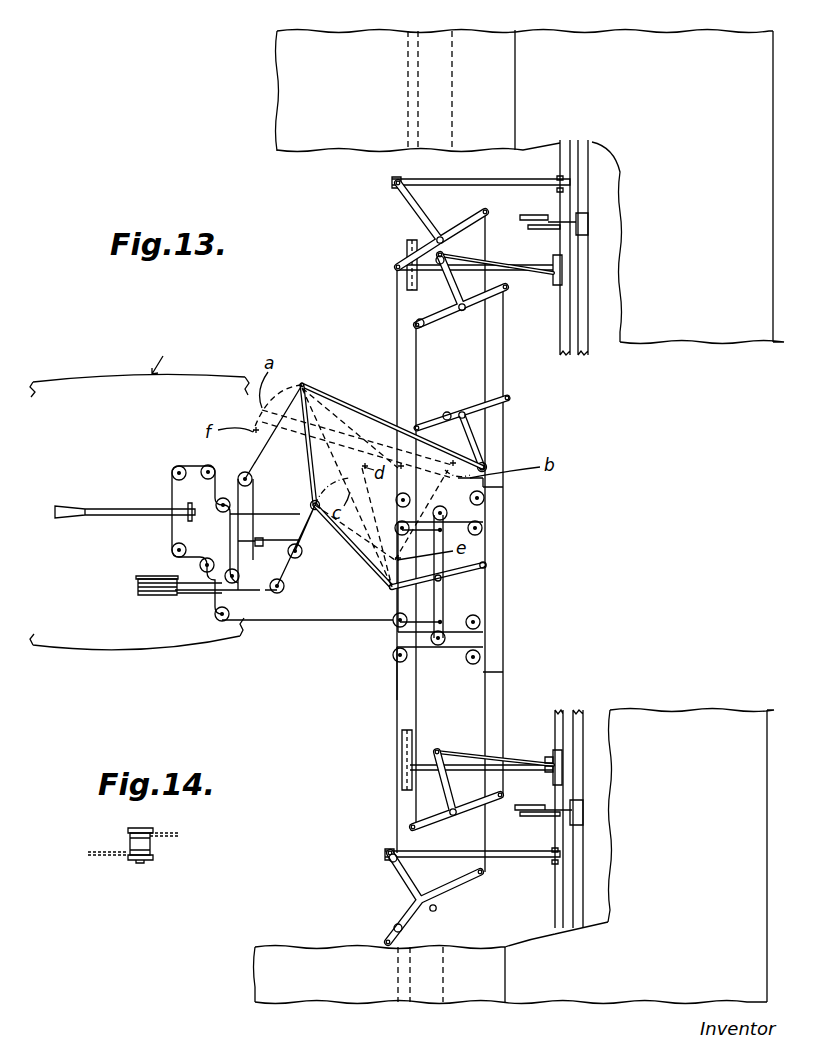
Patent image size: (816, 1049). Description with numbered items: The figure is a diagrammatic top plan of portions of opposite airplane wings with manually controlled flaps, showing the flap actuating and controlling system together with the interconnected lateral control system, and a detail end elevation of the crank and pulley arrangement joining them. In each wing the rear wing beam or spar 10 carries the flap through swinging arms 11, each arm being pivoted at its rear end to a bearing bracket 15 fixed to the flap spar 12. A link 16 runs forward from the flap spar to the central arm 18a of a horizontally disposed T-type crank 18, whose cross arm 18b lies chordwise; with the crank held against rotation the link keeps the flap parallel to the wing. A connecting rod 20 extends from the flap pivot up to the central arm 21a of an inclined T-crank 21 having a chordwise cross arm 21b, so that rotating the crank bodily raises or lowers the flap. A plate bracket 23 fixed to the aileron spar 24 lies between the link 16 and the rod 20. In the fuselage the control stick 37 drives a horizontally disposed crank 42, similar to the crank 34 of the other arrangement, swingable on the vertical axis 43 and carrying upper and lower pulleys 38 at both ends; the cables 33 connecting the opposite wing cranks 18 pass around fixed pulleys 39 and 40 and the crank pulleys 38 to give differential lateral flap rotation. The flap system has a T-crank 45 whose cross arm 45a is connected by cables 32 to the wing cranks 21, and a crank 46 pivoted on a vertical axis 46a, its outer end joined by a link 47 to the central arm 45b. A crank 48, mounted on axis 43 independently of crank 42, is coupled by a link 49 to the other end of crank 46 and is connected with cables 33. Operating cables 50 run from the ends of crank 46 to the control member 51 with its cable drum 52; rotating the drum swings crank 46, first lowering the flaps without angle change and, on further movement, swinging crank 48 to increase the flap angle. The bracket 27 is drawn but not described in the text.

In FIG. 13, the rear wing beam or spar 10 is at (418, 42).
In FIG. 13, the arm 11 is at (522, 277).
In FIG. 13, the flap spar 12 is at (560, 336).
In FIG. 13, the bearing bracket 15 is at (555, 760).
In FIG. 13, the link 16 is at (481, 184).
In FIG. 13, the crank 18 is at (422, 228).
In FIG. 13, the central arm 18a is at (399, 868).
In FIG. 13, the cross arm 18b is at (420, 922).
In FIG. 13, the connecting rod 20 is at (507, 268).
In FIG. 13, the T-crank 21 is at (460, 315).
In FIG. 13, the central arm 21a is at (432, 272).
In FIG. 13, the cross arm 21b is at (420, 328).
In FIG. 13, the bracket or plate member 23 is at (566, 228).
In FIG. 13, the spar 24 is at (583, 277).
In FIG. 13, the bracket plate 27 is at (528, 228).
In FIG. 13, the cables 32 is at (417, 408).
In FIG. 13, the cables 33 is at (397, 363).
In FIG. 14, the cables 33 is at (178, 834).
In FIG. 14, the crank 34 is at (152, 843).
In FIG. 13, the control stick 37 is at (113, 508).
In FIG. 13, the crank pulleys 38 is at (482, 513).
In FIG. 14, the crank pulleys 38 is at (146, 828).
In FIG. 13, the fixed pulleys 39 is at (402, 524).
In FIG. 13, the fixed pulleys 40 is at (485, 497).
In FIG. 13, the crank 42 is at (442, 598).
In FIG. 13, the vertical axis 43 is at (446, 580).
In FIG. 13, the T-crank 45 is at (478, 415).
In FIG. 13, the cross arm 45a is at (448, 411).
In FIG. 13, the central arm 45b is at (484, 460).
In FIG. 13, the crank 46 is at (307, 400).
In FIG. 13, the vertical axis 46a is at (313, 505).
In FIG. 13, the link 47 is at (362, 412).
In FIG. 13, the crank 48 is at (487, 556).
In FIG. 13, the link 49 is at (355, 549).
In FIG. 13, the operating cables 50 is at (240, 541).
In FIG. 13, the control member 51 is at (140, 578).
In FIG. 13, the cable drum 52 is at (150, 598).